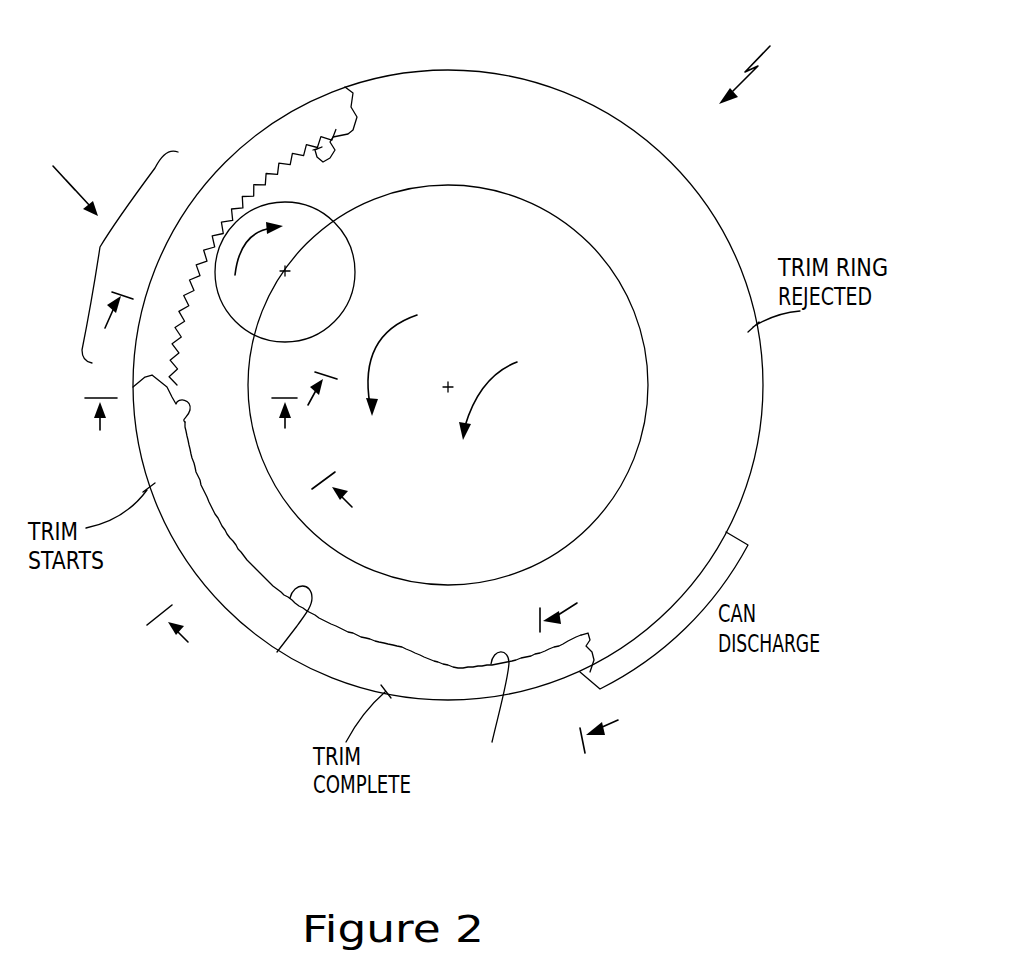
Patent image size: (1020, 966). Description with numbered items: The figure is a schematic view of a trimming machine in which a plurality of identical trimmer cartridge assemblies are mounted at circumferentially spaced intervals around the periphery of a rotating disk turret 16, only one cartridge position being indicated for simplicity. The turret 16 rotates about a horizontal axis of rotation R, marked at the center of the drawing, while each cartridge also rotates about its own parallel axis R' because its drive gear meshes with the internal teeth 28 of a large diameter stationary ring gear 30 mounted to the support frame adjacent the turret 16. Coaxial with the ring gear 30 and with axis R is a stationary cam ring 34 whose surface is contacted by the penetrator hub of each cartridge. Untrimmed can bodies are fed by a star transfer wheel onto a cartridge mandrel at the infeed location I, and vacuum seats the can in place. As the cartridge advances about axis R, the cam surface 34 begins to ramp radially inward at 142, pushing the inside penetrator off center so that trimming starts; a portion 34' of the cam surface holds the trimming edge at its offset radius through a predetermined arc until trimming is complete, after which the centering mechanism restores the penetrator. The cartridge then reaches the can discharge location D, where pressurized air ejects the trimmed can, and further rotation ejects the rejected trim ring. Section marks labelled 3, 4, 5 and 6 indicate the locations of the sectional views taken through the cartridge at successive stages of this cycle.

The disk turret 16 is at (500, 394).
The internal teeth 28 is at (335, 130).
The stationary ring gear 30 is at (268, 145).
The stationary cam ring 34 is at (389, 547).
The portion of the cam surface 34' is at (263, 641).
The ramp of the cam surface 142 is at (183, 417).
The turret axis of rotation R is at (421, 363).
The cartridge axis of rotation R' is at (285, 272).
The can discharge location D is at (754, 64).
The infeed location I is at (109, 251).
The section line 3 is at (221, 335).
The section line 4 is at (191, 398).
The section line 5 is at (247, 548).
The section line 6 is at (570, 680).